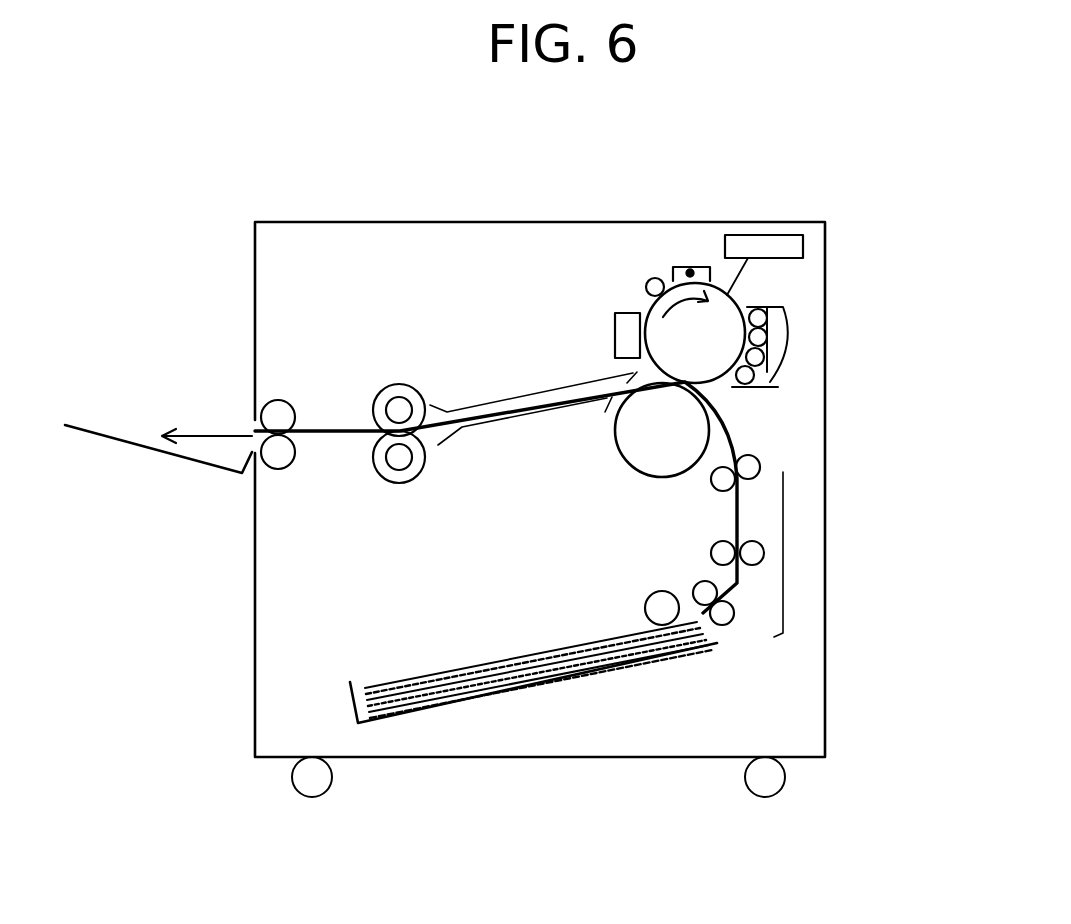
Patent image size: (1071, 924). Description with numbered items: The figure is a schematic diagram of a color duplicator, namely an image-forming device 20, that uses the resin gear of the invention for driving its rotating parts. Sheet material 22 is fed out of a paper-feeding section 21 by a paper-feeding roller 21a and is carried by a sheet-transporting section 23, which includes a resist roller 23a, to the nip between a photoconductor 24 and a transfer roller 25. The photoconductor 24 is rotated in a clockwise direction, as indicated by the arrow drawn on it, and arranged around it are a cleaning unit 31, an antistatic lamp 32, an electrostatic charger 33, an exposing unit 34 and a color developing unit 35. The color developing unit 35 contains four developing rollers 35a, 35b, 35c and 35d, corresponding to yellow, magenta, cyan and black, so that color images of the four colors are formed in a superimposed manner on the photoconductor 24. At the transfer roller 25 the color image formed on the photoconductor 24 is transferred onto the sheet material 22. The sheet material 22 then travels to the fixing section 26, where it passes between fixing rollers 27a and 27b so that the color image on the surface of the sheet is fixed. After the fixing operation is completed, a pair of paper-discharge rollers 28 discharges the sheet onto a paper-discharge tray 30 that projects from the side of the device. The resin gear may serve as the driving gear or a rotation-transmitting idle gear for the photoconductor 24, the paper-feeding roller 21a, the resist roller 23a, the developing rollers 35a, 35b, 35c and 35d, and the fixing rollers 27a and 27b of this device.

The image-forming device 20 is at (345, 201).
The paper-feeding section 21 is at (589, 687).
The paper-feeding roller 21a is at (655, 605).
The sheet material 22 is at (533, 652).
The sheet-transporting section 23 is at (807, 571).
The resist roller 23a is at (770, 458).
The photoconductor 24 is at (642, 302).
The transfer roller 25 is at (648, 440).
The fixing section 26 is at (365, 397).
The fixing roller 27a is at (400, 404).
The fixing roller 27b is at (397, 463).
The paper-discharge rollers 28 is at (277, 418).
The paper-discharge tray 30 is at (140, 447).
The cleaning unit 31 is at (627, 335).
The antistatic lamp 32 is at (648, 282).
The electrostatic charger 33 is at (690, 272).
The exposing unit 34 is at (758, 240).
The color developing unit 35 is at (772, 380).
The developing roller 35a is at (760, 312).
The developing roller 35b is at (763, 333).
The developing roller 35c is at (762, 360).
The developing roller 35d is at (753, 378).